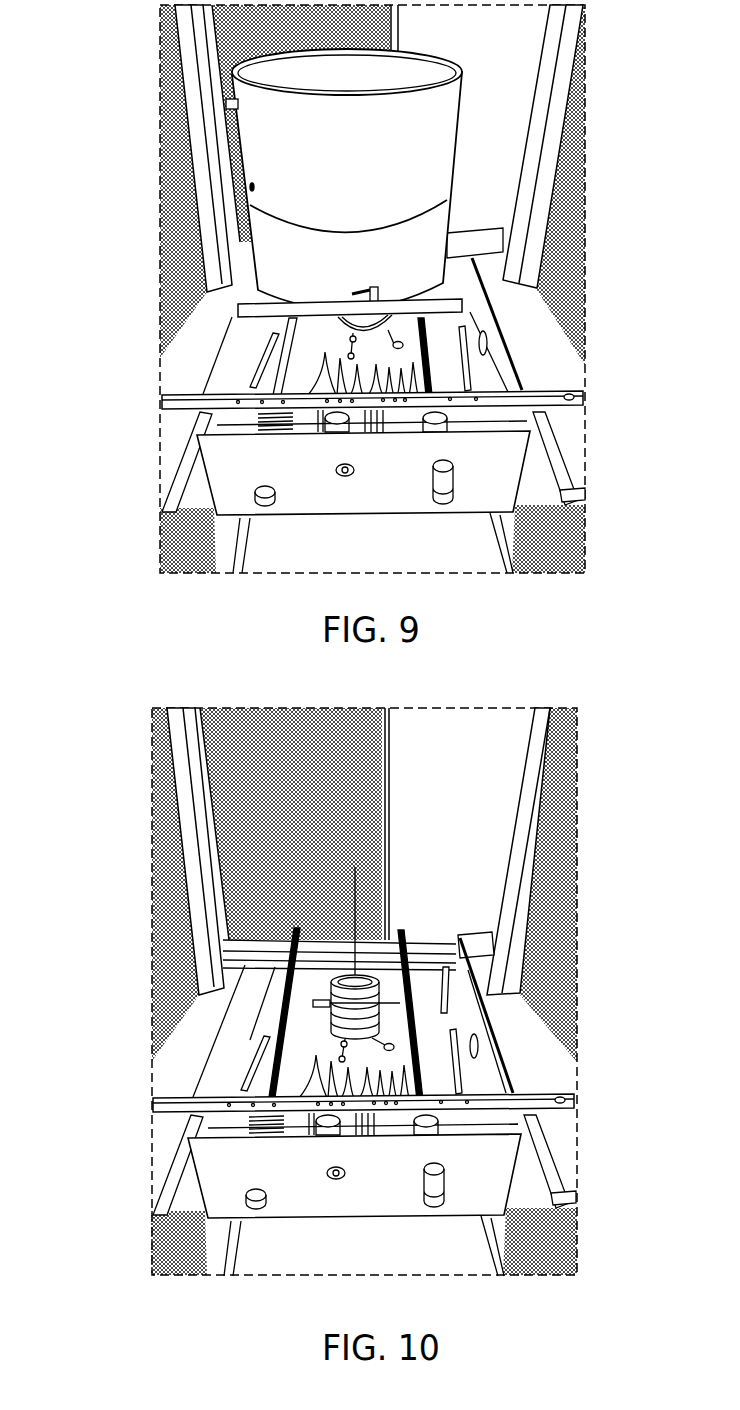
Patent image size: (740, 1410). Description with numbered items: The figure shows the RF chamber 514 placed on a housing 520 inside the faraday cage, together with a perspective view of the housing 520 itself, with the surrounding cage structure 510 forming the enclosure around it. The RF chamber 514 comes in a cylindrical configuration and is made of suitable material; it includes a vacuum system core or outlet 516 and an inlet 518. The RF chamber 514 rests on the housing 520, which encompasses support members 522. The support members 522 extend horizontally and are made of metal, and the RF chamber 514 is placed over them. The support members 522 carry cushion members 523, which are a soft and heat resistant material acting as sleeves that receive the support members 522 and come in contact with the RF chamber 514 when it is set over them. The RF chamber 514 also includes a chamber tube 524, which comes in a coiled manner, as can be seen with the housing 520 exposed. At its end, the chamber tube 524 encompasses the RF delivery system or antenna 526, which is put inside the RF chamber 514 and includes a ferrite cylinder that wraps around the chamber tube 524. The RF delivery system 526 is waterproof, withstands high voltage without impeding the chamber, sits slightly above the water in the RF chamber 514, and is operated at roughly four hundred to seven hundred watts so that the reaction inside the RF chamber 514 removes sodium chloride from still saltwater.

In FIG. 10, the housing frame wall 510 is at (252, 777).
In FIG. 9, the RF chamber 514 is at (315, 158).
In FIG. 9, the vacuum system core or outlet 516 is at (230, 103).
In FIG. 9, the inlet 518 is at (378, 293).
In FIG. 9, the housing 520 is at (378, 463).
In FIG. 10, the housing 520 is at (473, 1175).
In FIG. 9, the support members 522 is at (278, 352).
In FIG. 10, the support members 522 is at (455, 1045).
In FIG. 10, the cushion members 523 is at (458, 968).
In FIG. 10, the chamber tube 524 is at (430, 1020).
In FIG. 10, the RF delivery system or antenna 526 is at (353, 888).